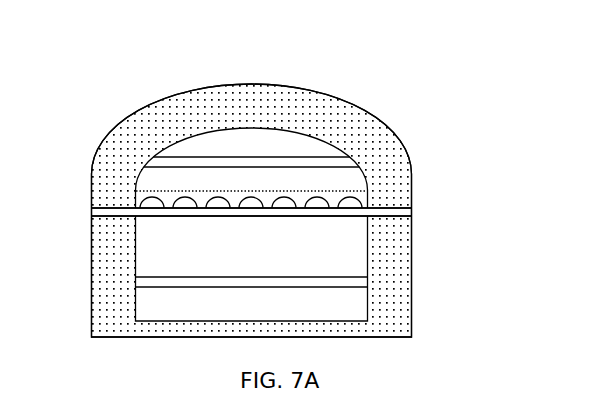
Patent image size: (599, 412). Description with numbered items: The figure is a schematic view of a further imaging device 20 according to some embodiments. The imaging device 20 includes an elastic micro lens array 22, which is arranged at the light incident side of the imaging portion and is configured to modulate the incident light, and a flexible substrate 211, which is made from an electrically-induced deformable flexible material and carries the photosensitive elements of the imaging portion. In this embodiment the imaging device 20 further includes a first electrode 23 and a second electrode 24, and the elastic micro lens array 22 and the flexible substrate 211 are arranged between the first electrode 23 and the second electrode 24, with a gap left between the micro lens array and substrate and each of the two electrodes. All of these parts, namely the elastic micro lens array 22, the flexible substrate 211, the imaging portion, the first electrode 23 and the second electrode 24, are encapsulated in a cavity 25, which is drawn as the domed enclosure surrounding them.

The imaging device 20 is at (120, 51).
The cavity 25 is at (318, 110).
The second electrode 24 is at (338, 158).
The elastic micro lens array 22 is at (353, 192).
The flexible substrate 211 is at (403, 210).
The first electrode 23 is at (360, 285).